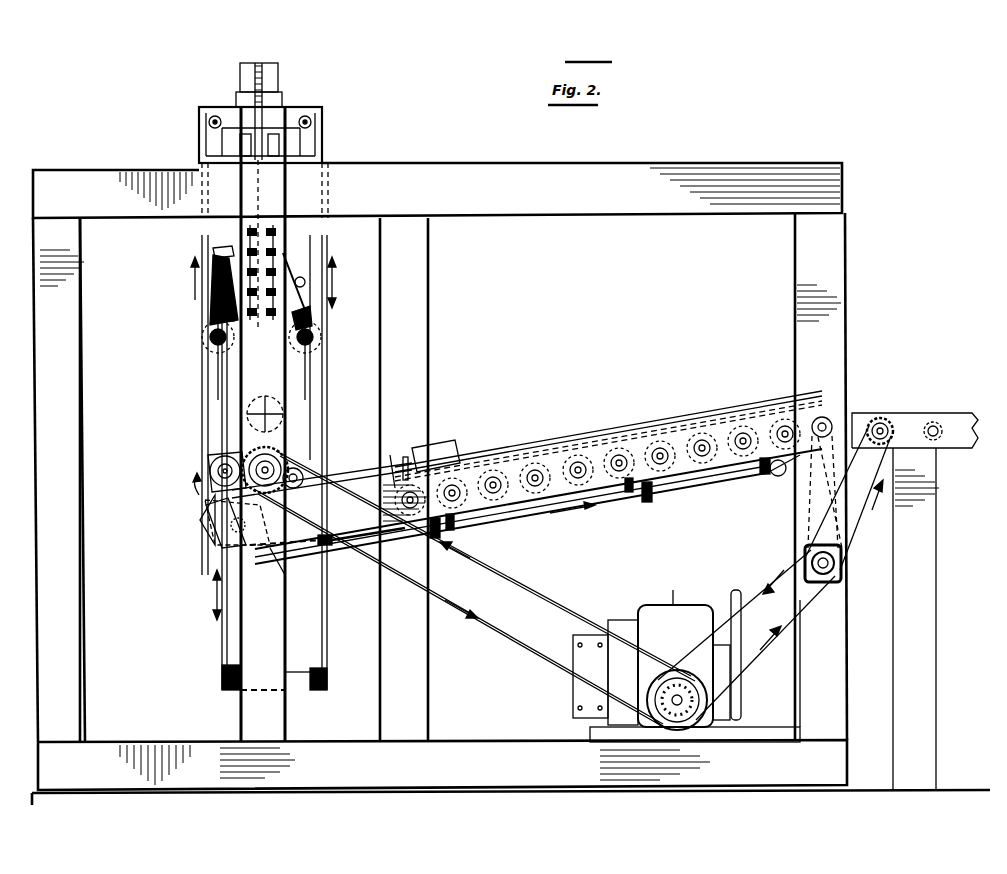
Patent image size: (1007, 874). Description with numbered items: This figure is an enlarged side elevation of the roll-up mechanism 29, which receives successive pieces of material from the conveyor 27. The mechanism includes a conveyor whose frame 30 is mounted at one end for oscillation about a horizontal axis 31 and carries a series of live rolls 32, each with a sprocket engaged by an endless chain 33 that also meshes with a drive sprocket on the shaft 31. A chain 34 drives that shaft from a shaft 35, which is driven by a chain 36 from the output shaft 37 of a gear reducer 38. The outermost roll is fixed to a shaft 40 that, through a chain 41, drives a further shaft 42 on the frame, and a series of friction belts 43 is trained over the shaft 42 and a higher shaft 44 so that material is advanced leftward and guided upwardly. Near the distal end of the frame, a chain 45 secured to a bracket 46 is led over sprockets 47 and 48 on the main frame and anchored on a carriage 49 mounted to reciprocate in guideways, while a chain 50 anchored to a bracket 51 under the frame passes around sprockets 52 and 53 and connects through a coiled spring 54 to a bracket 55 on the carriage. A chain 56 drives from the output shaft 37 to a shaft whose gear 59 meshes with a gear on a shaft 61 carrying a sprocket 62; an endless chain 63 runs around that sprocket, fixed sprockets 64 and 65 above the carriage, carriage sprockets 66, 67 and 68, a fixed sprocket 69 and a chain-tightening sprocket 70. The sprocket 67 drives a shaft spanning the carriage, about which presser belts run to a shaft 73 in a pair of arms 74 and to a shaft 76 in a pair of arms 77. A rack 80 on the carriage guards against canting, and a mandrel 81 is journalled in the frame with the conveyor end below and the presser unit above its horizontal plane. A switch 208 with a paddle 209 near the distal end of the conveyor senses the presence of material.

The conveyor 27 is at (952, 412).
The roll-up mechanism 29 is at (778, 158).
The frame 30 is at (608, 448).
The horizontal axis / shaft 31 is at (828, 420).
The live rolls 32 is at (597, 478).
The endless chain 33 is at (620, 510).
The chain 34 is at (806, 512).
The shaft 35 is at (843, 561).
The chain 36 is at (796, 600).
The output shaft 37 is at (686, 700).
The gear reducer 38 is at (686, 605).
The shaft 40 is at (288, 545).
The chain 41 is at (288, 560).
The shaft 42 is at (224, 540).
The friction belts 43 is at (224, 520).
The shaft 44 is at (212, 505).
The chain 45 is at (326, 382).
The bracket 46 is at (300, 490).
The sprocket 47 is at (324, 118).
The sprocket 48 is at (280, 106).
The carriage 49 is at (240, 250).
The chain 50 is at (222, 412).
The bracket 51 is at (330, 546).
The sprocket 52 is at (318, 668).
The sprocket 53 is at (225, 672).
The coiled spring 54 is at (214, 306).
The bracket 55 is at (216, 252).
The chain 56 is at (530, 594).
The gear 59 is at (282, 460).
The shaft 61 is at (211, 470).
The sprocket 62 is at (212, 462).
The endless chain 63 is at (204, 372).
The sprocket 64 is at (212, 114).
The sprocket 65 is at (296, 114).
The sprocket 66 is at (302, 282).
The sprocket 67 is at (228, 318).
The sprocket 68 is at (298, 318).
The sprocket 69 is at (300, 476).
The chain-tightening sprocket 70 is at (288, 468).
The shaft 73 is at (212, 342).
The arms 74 is at (214, 330).
The shaft 76 is at (314, 334).
The arms 77 is at (312, 343).
The rack 80 is at (256, 70).
The mandrel 81 is at (250, 413).
The switch 208 is at (450, 434).
The paddle 209 is at (403, 460).